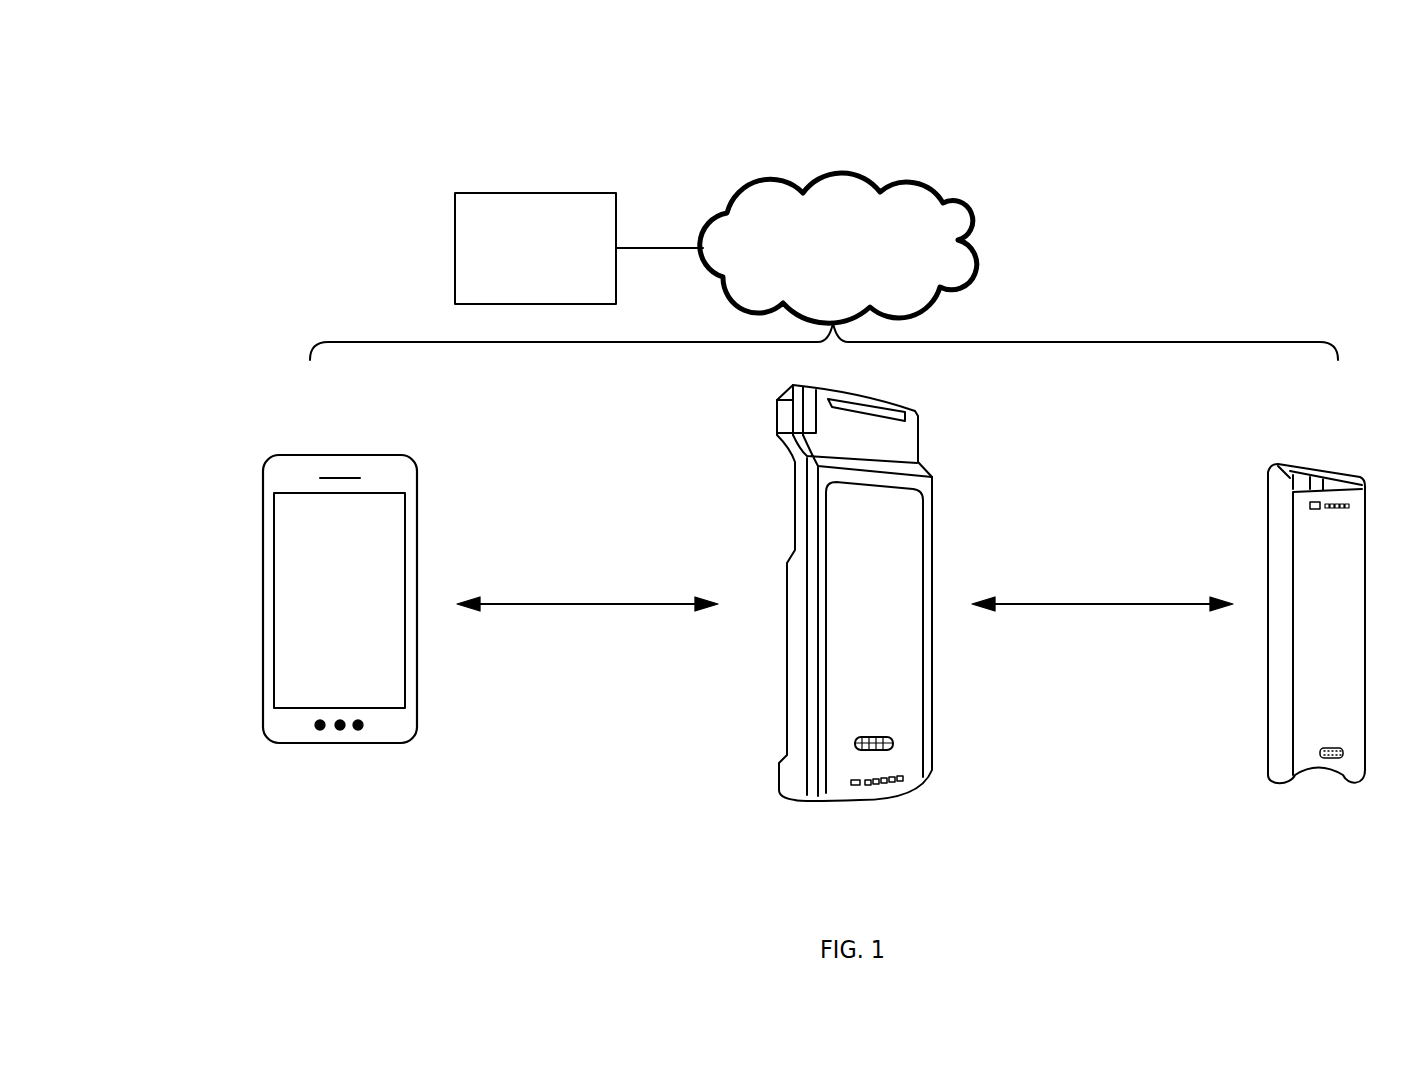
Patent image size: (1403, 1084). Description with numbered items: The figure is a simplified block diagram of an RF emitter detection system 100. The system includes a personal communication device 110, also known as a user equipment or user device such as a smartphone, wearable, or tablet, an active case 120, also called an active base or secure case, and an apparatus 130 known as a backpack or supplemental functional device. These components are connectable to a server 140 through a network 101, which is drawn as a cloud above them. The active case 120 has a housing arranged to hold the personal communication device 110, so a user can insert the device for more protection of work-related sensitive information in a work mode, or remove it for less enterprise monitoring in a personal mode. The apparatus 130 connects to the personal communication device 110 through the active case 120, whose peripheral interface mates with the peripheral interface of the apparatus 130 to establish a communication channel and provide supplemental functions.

The RF emitter detection system 100 is at (279, 98).
The network 101 is at (867, 262).
The personal communication device 110 is at (335, 744).
The active case 120 is at (862, 801).
The apparatus 130 is at (1322, 776).
The server 140 is at (595, 261).